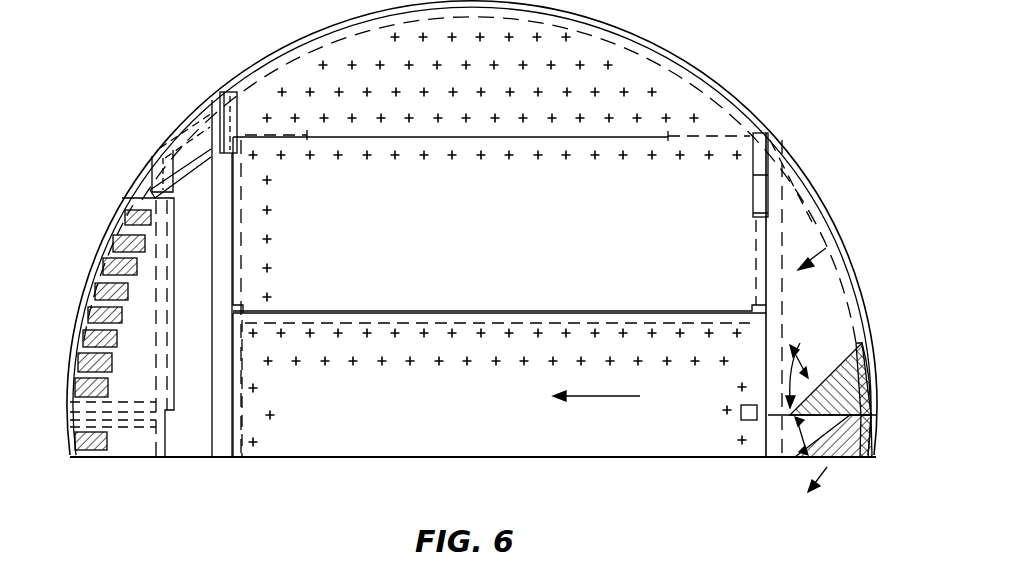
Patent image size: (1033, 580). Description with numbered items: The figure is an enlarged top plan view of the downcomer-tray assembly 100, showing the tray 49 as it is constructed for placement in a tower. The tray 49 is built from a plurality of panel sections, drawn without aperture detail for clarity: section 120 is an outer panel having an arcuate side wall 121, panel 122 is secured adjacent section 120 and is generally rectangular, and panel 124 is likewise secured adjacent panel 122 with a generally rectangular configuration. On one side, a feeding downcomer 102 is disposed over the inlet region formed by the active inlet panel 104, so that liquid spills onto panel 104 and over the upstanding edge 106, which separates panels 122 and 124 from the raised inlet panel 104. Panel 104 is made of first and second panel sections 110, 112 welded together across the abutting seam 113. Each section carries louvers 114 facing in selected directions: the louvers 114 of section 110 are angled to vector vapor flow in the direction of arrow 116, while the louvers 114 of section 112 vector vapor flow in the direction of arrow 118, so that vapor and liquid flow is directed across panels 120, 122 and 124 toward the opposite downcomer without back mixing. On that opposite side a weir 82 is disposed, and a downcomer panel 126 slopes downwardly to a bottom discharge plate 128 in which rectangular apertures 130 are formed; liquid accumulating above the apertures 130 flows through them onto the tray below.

The downcomer-tray assembly 100 is at (820, 133).
The tray 49 is at (595, 72).
The arcuate side wall 121 is at (672, 58).
The section 120 is at (680, 105).
The weir 82 is at (228, 92).
The downcomer panel 126 is at (196, 186).
The feeding downcomer 102 is at (193, 217).
The bottom discharge plate 128 is at (152, 369).
The rectangular apertures 130 is at (122, 243).
The panel 122 is at (660, 210).
The panel 124 is at (686, 415).
The upstanding edge 106 is at (769, 220).
The active inlet panel 104 is at (828, 233).
The first panel section 110 is at (817, 298).
The arrow 116 is at (803, 343).
The louvers 114 is at (850, 353).
The abutting seam 113 is at (858, 396).
The second panel section 112 is at (870, 430).
The arrow 118 is at (827, 467).